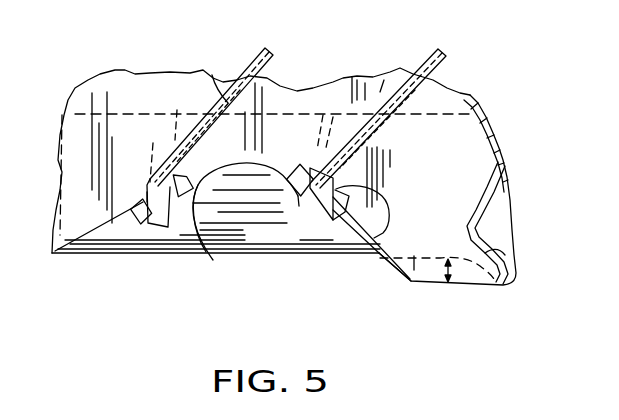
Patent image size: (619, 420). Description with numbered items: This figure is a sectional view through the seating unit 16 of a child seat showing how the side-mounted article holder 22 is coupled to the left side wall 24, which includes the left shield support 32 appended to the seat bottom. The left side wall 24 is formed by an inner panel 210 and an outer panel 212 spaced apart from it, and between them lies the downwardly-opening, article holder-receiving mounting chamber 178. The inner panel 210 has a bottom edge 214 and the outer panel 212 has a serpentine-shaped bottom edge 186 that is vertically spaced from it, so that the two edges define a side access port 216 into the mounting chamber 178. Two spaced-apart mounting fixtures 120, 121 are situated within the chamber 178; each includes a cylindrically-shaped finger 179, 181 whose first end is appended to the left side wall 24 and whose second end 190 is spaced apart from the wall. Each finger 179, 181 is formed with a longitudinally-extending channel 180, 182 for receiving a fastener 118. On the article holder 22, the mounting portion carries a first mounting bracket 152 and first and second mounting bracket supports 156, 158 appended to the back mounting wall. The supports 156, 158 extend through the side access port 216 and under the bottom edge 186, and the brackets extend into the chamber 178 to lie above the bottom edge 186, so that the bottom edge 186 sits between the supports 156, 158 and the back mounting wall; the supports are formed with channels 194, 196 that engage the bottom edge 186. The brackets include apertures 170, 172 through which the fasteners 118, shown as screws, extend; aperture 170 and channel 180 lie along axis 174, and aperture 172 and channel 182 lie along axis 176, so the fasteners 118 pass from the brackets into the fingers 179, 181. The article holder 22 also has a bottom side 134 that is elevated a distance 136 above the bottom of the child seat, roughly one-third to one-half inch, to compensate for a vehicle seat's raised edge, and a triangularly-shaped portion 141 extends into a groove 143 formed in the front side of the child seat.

The seating unit 16 is at (402, 309).
The side-mounted article holder 22 is at (190, 267).
The left side wall 24 is at (87, 77).
The left shield support 32 is at (94, 213).
The fasteners 118 is at (147, 192).
The mounting fixture 120 is at (392, 126).
The mounting fixture 121 is at (263, 102).
The bottom side 134 is at (414, 272).
The distance 136 is at (453, 273).
The triangularly-shaped portion 141 is at (503, 232).
The groove 143 is at (513, 287).
The first mounting bracket 152 is at (389, 206).
The first mounting bracket support 156 is at (352, 218).
The second mounting bracket support 158 is at (202, 248).
The aperture 170 is at (320, 121).
The aperture 172 is at (163, 155).
The axis 174 is at (421, 64).
The axis 176 is at (270, 56).
The article holder-receiving mounting chamber 178 is at (352, 246).
The finger 179 is at (384, 80).
The channel 180 is at (344, 83).
The finger 181 is at (212, 75).
The channel 182 is at (180, 112).
The bottom edge 186 is at (380, 260).
The second end 190 is at (398, 182).
The channel 194 is at (292, 170).
The channel 196 is at (145, 228).
The inner panel 210 is at (99, 245).
The outer panel 212 is at (88, 195).
The bottom edge 214 is at (281, 257).
The side access port 216 is at (204, 289).